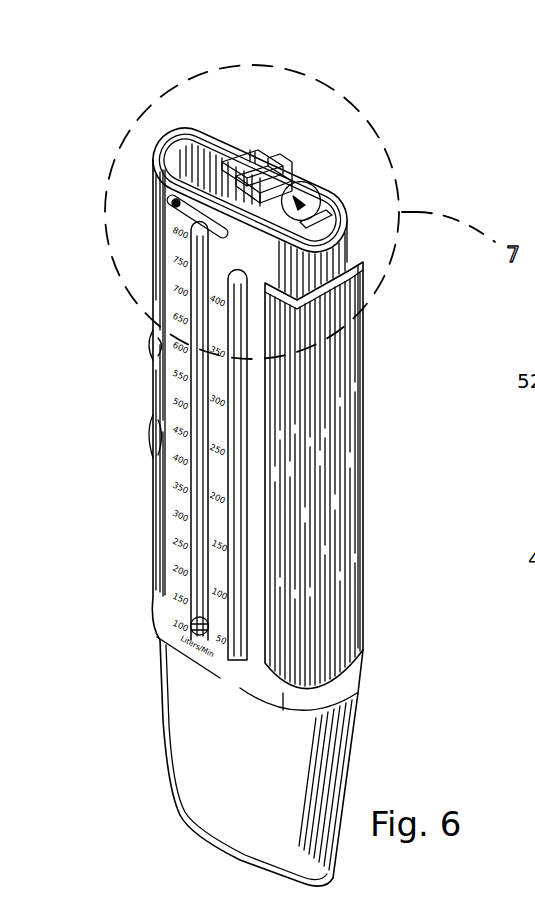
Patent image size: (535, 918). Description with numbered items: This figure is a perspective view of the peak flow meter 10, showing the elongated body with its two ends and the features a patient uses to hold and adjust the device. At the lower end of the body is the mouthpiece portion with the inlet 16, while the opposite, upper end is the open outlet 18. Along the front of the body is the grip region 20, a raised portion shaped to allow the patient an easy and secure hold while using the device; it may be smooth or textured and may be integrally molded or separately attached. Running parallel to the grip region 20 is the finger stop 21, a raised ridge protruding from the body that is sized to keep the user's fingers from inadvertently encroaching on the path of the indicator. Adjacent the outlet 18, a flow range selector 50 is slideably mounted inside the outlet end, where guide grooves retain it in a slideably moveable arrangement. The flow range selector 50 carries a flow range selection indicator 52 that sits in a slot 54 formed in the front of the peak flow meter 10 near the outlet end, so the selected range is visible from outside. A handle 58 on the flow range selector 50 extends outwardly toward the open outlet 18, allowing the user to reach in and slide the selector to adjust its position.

The peak flow meter 10 is at (380, 602).
The inlet 16 is at (205, 848).
The outlet 18 is at (275, 152).
The grip region 20 is at (347, 558).
The finger stop 21 is at (235, 478).
The flow range selector 50 is at (308, 206).
The flow range selection indicator 52 is at (170, 205).
The slot 54 is at (178, 140).
The handle 58 is at (290, 182).